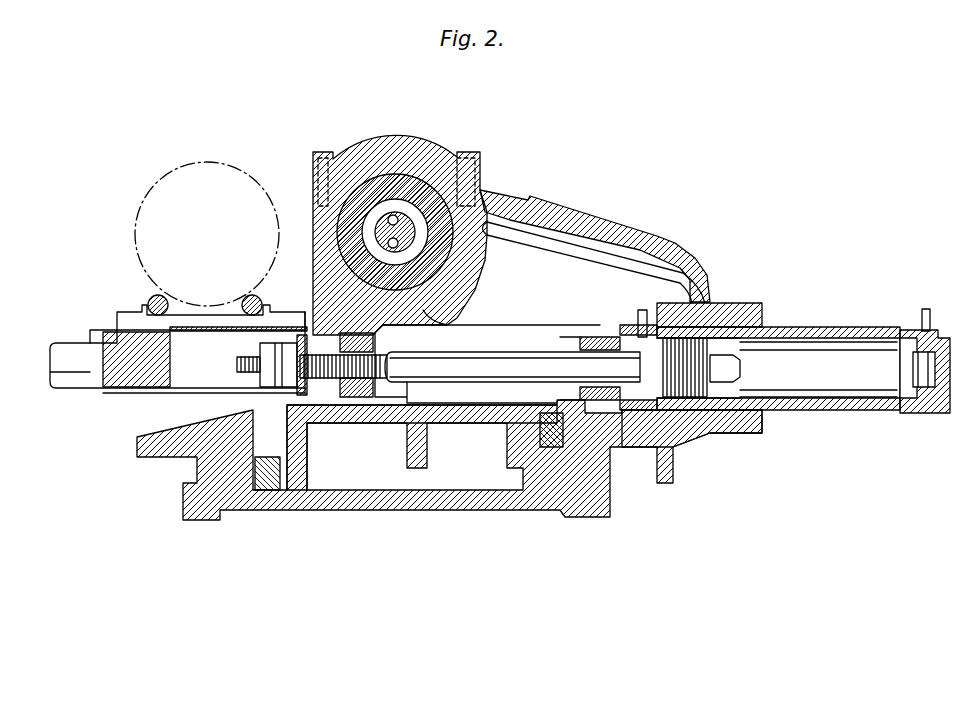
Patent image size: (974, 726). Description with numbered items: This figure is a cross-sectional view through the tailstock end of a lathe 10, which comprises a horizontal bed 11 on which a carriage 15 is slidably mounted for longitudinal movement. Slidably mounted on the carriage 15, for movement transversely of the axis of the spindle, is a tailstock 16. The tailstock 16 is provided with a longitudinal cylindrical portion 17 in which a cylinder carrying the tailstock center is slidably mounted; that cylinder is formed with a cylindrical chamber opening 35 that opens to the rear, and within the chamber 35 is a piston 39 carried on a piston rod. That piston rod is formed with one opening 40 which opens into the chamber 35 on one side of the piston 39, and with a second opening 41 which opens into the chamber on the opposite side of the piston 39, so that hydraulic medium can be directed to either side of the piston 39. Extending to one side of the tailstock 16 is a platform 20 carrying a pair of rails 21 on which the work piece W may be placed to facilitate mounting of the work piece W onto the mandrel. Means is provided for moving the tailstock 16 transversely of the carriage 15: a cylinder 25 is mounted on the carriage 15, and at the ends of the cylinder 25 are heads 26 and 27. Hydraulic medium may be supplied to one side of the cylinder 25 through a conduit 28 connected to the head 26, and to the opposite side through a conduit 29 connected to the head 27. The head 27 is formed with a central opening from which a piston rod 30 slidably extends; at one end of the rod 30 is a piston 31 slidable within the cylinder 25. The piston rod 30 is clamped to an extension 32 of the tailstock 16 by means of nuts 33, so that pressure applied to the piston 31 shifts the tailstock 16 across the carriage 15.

The lathe 10 is at (107, 452).
The bed 11 is at (560, 515).
The carriage 15 is at (712, 435).
The tailstock 16 is at (683, 244).
The longitudinal cylindrical portion 17 is at (410, 153).
The platform 20 is at (127, 320).
The rails 21 is at (150, 295).
The cylinder 25 is at (832, 326).
The head 26 is at (956, 392).
The head 27 is at (623, 333).
The conduit 28 is at (933, 313).
The conduit 29 is at (643, 312).
The piston rod 30 is at (530, 352).
The piston 31 is at (713, 306).
The extension 32 is at (325, 337).
The nuts 33 is at (288, 382).
The cylindrical chamber opening 35 is at (417, 223).
The piston 39 is at (453, 200).
The opening 40 is at (395, 243).
The second opening 41 is at (390, 216).
The work piece W is at (240, 166).